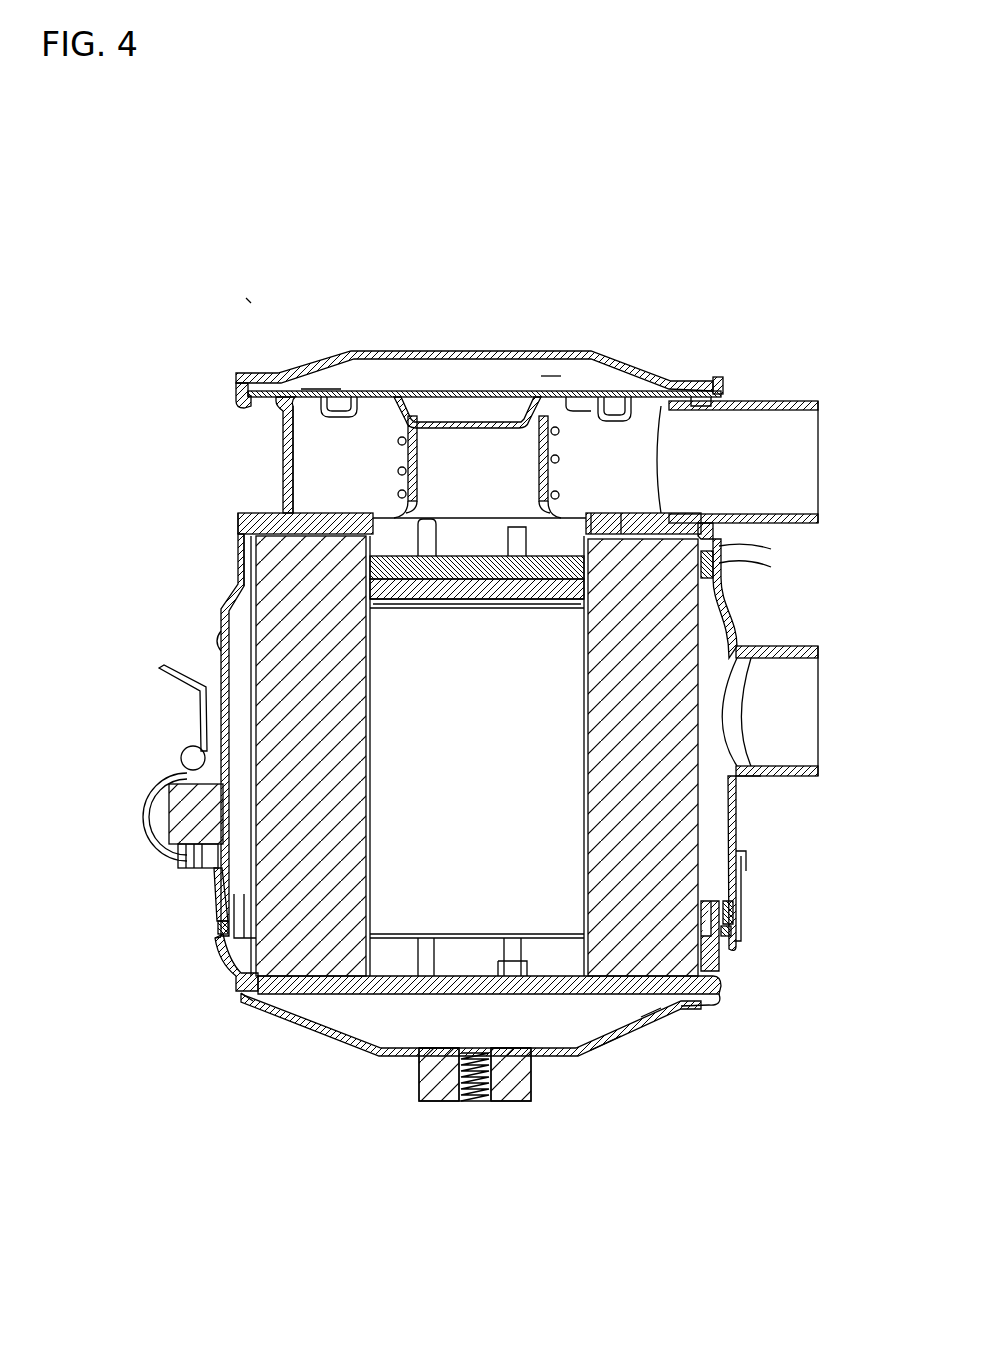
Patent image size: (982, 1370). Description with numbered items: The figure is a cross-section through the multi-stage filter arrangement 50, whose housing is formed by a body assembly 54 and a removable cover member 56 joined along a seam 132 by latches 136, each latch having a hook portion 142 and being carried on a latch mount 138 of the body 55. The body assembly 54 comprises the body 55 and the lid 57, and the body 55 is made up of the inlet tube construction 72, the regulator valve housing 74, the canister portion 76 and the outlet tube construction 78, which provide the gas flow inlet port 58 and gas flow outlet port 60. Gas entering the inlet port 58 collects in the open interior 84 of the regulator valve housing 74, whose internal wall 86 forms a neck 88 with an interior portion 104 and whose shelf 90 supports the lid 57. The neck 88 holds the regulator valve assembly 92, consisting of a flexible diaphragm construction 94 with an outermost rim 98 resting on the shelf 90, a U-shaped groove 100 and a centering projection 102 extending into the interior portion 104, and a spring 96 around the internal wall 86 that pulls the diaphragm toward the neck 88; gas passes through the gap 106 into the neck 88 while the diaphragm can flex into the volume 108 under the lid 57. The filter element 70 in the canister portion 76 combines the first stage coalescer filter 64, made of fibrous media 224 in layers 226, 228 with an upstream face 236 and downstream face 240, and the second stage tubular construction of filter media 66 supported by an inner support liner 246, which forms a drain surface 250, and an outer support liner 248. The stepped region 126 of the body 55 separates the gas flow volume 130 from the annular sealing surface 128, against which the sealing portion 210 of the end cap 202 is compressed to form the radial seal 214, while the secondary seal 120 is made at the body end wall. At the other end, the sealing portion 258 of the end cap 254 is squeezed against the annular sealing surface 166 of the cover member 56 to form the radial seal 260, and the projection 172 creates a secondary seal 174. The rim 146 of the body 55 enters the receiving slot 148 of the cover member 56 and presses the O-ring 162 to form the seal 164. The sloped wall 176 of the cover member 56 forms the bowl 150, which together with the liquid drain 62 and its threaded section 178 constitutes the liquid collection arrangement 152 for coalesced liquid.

The filter arrangement 50 is at (247, 297).
The body assembly 54 is at (283, 460).
The body 55 is at (225, 615).
The cover member 56 is at (740, 870).
The lid 57 is at (462, 352).
The gas flow inlet port 58 is at (806, 407).
The gas flow outlet port 60 is at (808, 662).
The liquid drain 62 is at (490, 1095).
The first stage coalescer filter 64 is at (465, 620).
The second stage tubular construction of filter media 66 is at (385, 770).
The filter element 70 is at (745, 625).
The inlet tube construction 72 is at (750, 385).
The regulator valve housing 74 is at (282, 421).
The canister portion 76 is at (240, 555).
The outlet tube construction 78 is at (780, 775).
The open interior 84 is at (322, 393).
The internal wall 86 is at (406, 458).
The neck 88 is at (547, 468).
The shelf 90 is at (700, 400).
The regulator valve assembly 92 is at (540, 372).
The diaphragm construction 94 is at (373, 392).
The spring 96 is at (405, 478).
The outermost rim 98 is at (242, 370).
The groove 100 is at (333, 408).
The centering projection 102 is at (455, 430).
The interior portion 104 is at (557, 445).
The gap 106 is at (578, 400).
The volume 108 is at (425, 363).
The secondary seal 120 is at (605, 515).
The stepped region 126 is at (230, 600).
The annular sealing surface 128 is at (725, 527).
The gas flow volume 130 is at (222, 640).
The seam 132 is at (735, 845).
The latch 136 is at (155, 778).
The latch mount 138 is at (145, 810).
The hook portion 142 is at (178, 862).
The rim 146 is at (732, 925).
The receiving slot 148 is at (735, 905).
The bowl 150 is at (300, 1020).
The liquid collection arrangement 152 is at (340, 1065).
The O-ring 162 is at (224, 950).
The seal 164 is at (216, 920).
The annular sealing surface 166 is at (228, 936).
The projection 172 is at (670, 1005).
The secondary seal 174 is at (252, 990).
The sloped wall 176 is at (595, 1045).
The threaded section 178 is at (460, 1085).
The end cap 202 is at (300, 512).
The sealing portion 210 is at (714, 560).
The radial seal 214 is at (240, 527).
The fibrous media 224 is at (540, 598).
The layer 226 is at (505, 605).
The layer 228 is at (468, 558).
The upstream face 236 is at (450, 545).
The downstream face 240 is at (410, 605).
The inner support liner 246 is at (370, 825).
The outer support liner 248 is at (200, 715).
The drain surface 250 is at (585, 790).
The end cap 254 is at (338, 985).
The sealing portion 258 is at (708, 940).
The radial seal 260 is at (232, 975).